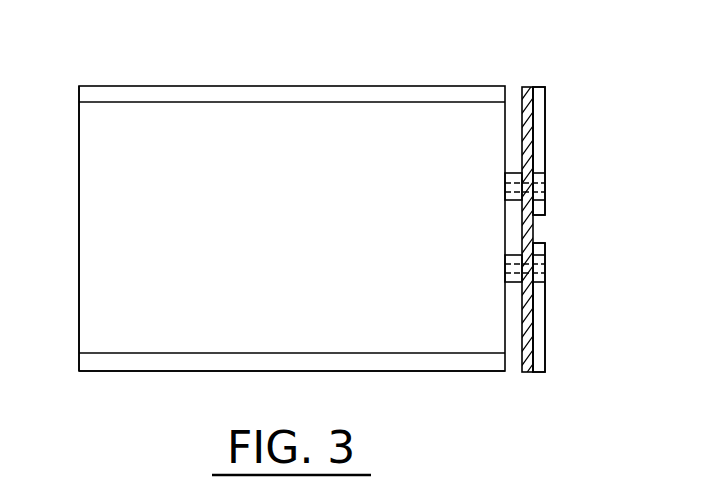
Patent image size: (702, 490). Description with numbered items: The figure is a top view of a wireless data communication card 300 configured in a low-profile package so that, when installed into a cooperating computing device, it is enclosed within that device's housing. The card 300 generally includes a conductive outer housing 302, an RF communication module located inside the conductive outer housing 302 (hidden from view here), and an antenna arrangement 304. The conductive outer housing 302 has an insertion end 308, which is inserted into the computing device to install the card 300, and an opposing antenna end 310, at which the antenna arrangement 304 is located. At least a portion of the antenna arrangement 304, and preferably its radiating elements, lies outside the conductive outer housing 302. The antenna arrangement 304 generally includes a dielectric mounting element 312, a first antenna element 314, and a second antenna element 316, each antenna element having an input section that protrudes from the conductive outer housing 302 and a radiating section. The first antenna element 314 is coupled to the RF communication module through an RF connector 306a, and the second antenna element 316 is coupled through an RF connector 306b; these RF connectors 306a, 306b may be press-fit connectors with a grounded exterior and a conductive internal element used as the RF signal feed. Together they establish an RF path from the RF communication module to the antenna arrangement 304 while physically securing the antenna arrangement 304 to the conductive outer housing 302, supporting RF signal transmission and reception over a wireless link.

The wireless data communication card 300 is at (310, 37).
The conductive outer housing 302 is at (310, 247).
The antenna arrangement 304 is at (575, 95).
The RF connector 306a is at (513, 172).
The RF connector 306b is at (512, 285).
The insertion end 308 is at (79, 203).
The antenna end 310 is at (505, 371).
The dielectric mounting element 312 is at (530, 87).
The first antenna element 314 is at (545, 158).
The second antenna element 316 is at (545, 290).